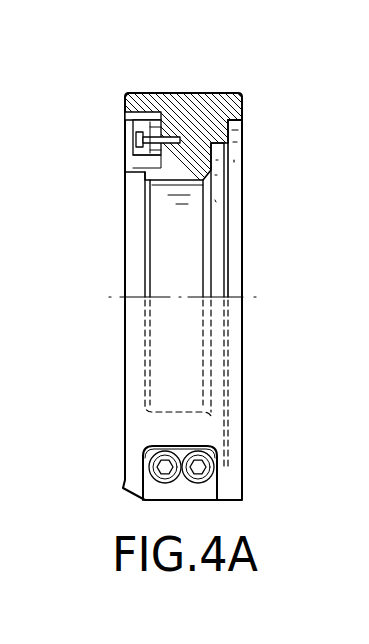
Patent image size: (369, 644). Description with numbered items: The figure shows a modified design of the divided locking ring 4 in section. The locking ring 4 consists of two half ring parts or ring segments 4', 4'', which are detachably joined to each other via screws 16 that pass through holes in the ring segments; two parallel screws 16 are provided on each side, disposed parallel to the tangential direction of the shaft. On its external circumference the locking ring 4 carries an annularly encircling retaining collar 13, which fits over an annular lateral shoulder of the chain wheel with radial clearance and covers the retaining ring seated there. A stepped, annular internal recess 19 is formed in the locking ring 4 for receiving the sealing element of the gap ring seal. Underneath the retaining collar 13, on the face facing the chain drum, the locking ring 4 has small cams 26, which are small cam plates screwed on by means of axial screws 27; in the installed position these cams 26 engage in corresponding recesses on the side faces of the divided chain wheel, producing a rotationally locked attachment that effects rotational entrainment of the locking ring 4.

The locking ring 4 is at (148, 296).
The ring segment 4' is at (231, 104).
The ring segment 4'' is at (143, 318).
The retaining collar 13 is at (140, 100).
The screws 16 is at (163, 465).
The stepped annular internal recess 19 is at (243, 134).
The cams 26 is at (140, 163).
The axial screws 27 is at (140, 140).